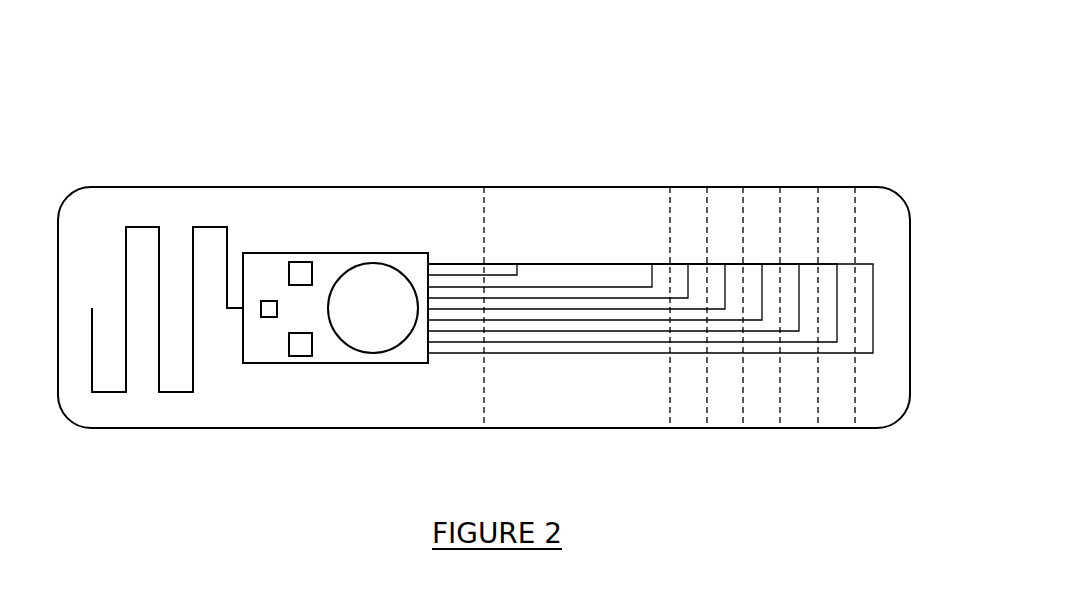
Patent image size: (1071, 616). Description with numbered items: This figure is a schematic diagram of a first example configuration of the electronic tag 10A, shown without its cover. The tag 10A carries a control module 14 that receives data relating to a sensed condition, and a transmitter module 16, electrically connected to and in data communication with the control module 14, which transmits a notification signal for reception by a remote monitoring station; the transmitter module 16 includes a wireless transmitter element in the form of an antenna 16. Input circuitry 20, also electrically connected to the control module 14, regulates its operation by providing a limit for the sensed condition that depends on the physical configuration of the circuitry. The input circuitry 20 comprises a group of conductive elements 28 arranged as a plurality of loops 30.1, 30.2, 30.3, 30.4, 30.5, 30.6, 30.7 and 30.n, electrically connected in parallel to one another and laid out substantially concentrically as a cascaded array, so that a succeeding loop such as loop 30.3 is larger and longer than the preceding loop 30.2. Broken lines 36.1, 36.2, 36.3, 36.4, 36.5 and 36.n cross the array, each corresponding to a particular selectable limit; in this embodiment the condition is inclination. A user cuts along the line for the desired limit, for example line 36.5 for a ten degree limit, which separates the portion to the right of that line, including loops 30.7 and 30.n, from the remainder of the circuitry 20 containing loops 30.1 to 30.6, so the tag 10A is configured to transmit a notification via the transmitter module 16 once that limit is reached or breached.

The electronic tag 10A is at (707, 85).
The control module 14 is at (263, 253).
The transmitter module 16 is at (143, 227).
The input circuitry 20 is at (460, 248).
The group of conductive elements 28 is at (887, 253).
The loop 30.1 is at (497, 274).
The loop 30.2 is at (580, 287).
The loop 30.3 is at (617, 297).
The loop 30.4 is at (507, 309).
The loop 30.5 is at (580, 331).
The loop 30.6 is at (613, 320).
The loop 30.7 is at (837, 302).
The loop 30.n is at (873, 338).
The broken line 36.1 is at (670, 228).
The broken line 36.2 is at (707, 389).
The broken line 36.3 is at (743, 228).
The broken line 36.4 is at (780, 389).
The broken line 36.5 is at (818, 228).
The broken line 36.n is at (855, 389).